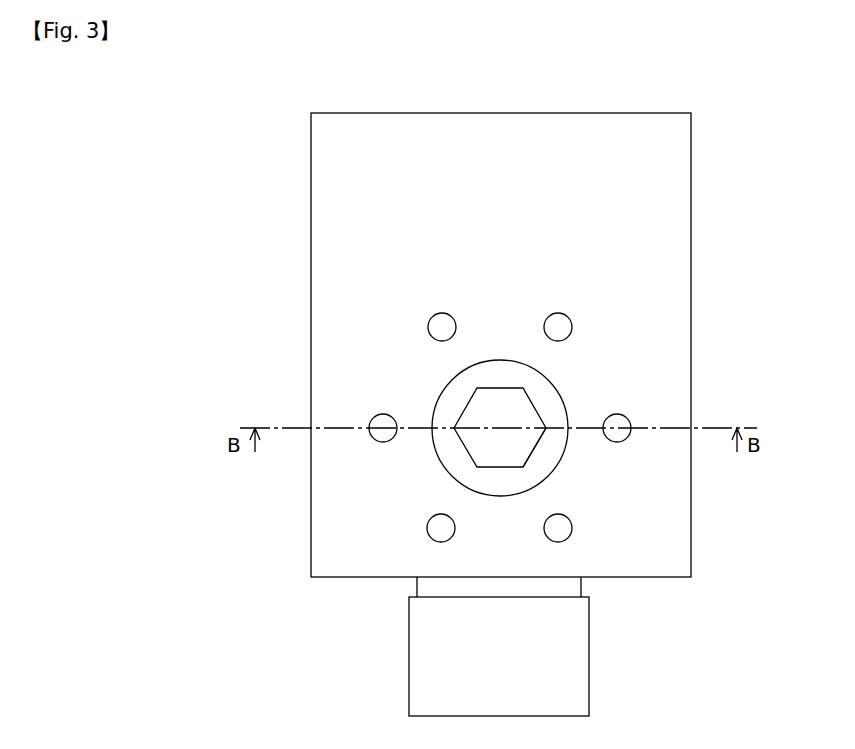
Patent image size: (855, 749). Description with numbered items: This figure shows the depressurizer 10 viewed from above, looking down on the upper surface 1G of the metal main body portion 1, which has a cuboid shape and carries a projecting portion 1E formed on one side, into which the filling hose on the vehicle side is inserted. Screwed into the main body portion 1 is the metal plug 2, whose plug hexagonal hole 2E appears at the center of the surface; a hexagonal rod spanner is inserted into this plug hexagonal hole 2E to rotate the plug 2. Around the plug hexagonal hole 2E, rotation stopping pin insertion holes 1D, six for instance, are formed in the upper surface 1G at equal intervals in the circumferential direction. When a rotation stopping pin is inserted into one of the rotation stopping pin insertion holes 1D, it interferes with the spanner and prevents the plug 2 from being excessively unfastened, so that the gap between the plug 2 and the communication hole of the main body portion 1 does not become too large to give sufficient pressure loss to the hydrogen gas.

The depressurizer 10 is at (713, 197).
The main body portion 1 is at (311, 538).
The upper surface 1G is at (353, 357).
The projecting portion 1E is at (589, 648).
The rotation stopping pin insertion holes 1D is at (447, 318).
The plug 2 is at (550, 401).
The plug hexagonal hole 2E is at (500, 467).